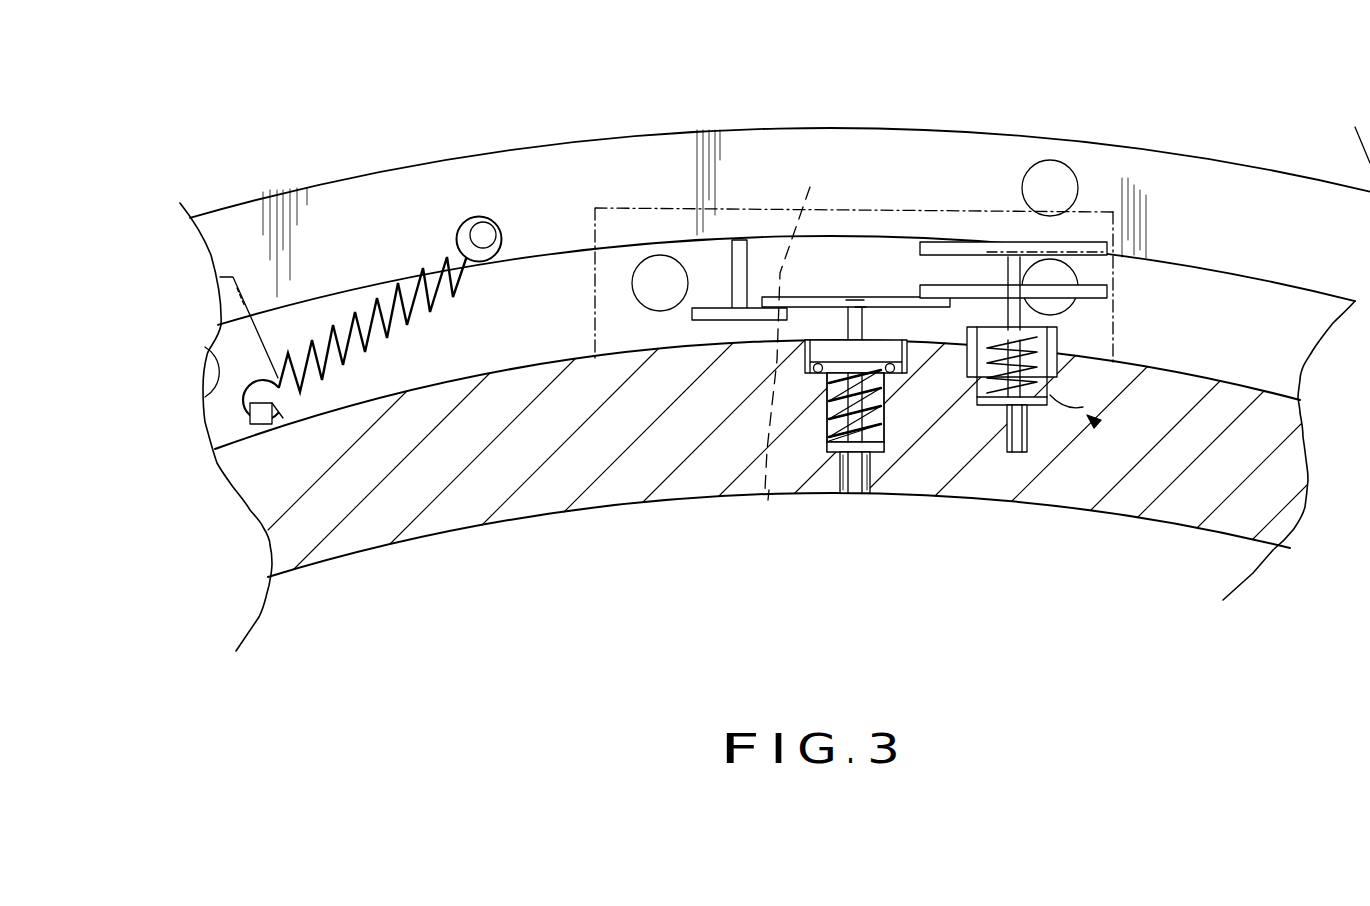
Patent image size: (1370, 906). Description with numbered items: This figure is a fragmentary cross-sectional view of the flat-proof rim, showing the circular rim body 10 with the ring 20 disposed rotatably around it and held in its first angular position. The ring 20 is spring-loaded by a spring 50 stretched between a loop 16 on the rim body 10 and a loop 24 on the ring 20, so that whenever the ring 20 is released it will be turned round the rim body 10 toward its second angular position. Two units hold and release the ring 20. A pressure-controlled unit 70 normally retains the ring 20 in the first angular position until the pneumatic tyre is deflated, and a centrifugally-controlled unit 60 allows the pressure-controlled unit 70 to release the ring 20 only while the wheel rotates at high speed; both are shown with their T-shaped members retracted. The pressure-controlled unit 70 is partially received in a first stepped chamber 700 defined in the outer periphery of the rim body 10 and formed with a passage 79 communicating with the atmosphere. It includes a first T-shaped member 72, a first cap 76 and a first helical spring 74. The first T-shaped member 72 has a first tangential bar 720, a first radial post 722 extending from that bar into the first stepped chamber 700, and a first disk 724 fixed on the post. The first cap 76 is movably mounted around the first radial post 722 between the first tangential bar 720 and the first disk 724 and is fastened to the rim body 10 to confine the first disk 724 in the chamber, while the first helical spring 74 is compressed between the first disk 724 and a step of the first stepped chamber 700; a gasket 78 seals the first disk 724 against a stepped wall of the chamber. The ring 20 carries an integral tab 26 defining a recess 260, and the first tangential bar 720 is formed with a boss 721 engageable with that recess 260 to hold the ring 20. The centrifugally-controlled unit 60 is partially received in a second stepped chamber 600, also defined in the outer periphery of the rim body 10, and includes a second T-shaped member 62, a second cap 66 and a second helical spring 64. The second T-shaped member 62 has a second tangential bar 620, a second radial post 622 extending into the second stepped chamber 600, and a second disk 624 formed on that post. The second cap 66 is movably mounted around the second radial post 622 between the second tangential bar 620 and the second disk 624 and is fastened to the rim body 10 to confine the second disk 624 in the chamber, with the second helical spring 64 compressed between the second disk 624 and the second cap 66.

The rim body 10 is at (437, 535).
The loop 16 is at (260, 428).
The ring 20 is at (642, 145).
The loop 24 is at (484, 232).
The tab 26 is at (703, 320).
The spring 50 is at (426, 258).
The centrifugally-controlled unit 60 is at (1097, 424).
The second T-shaped member 62 is at (1017, 324).
The second helical spring 64 is at (1057, 363).
The second cap 66 is at (978, 340).
The pressure-controlled unit 70 is at (895, 424).
The first T-shaped member 72 is at (858, 307).
The first helical spring 74 is at (836, 440).
The first cap 76 is at (812, 364).
The gasket 78 is at (862, 298).
The passage 79 is at (869, 478).
The recess 260 is at (769, 494).
The second stepped chamber 600 is at (1083, 407).
The second tangential bar 620 is at (1100, 287).
The second radial post 622 is at (1016, 455).
The second disk 624 is at (1050, 403).
The first stepped chamber 700 is at (884, 442).
The first tangential bar 720 is at (900, 300).
The boss 721 is at (794, 315).
The first radial post 722 is at (862, 480).
The first disk 724 is at (847, 307).